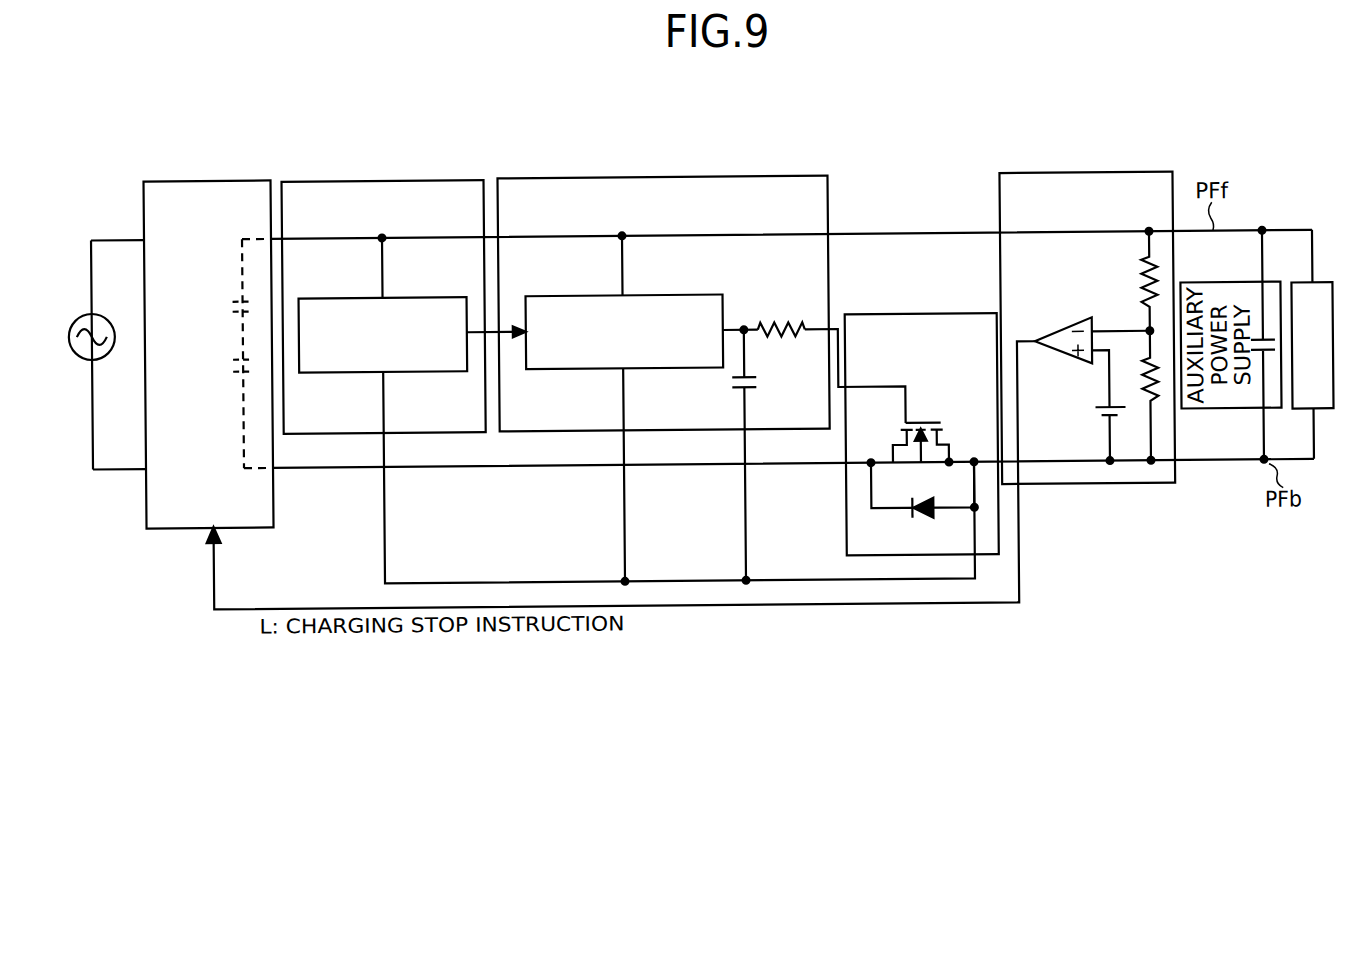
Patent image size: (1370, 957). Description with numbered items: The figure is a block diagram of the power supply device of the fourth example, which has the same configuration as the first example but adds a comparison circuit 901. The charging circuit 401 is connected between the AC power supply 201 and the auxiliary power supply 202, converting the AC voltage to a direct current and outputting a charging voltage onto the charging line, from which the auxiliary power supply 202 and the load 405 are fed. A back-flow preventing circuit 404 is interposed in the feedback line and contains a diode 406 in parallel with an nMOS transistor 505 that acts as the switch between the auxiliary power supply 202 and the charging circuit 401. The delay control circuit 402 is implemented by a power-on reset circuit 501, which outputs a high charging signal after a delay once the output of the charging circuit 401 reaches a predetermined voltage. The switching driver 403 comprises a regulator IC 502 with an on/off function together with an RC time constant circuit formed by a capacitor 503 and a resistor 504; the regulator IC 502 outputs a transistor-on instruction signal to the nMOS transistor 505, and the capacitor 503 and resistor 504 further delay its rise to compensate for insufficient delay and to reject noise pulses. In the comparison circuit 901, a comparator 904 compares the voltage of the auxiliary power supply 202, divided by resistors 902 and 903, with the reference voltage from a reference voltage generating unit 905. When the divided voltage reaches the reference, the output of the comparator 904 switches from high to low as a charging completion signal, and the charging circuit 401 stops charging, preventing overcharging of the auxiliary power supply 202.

The AC power supply 201 is at (102, 312).
The auxiliary power supply 202 is at (1265, 286).
The charging circuit 401 is at (207, 176).
The delay control circuit 402 is at (382, 177).
The switching driver 403 is at (663, 176).
The back-flow preventing circuit 404 is at (920, 314).
The load 405 is at (1322, 287).
The diode 406 is at (931, 518).
The power-on reset circuit 501 is at (432, 294).
The regulator IC 502 is at (700, 294).
The capacitor 503 is at (752, 380).
The resistor 504 is at (781, 321).
The nMOS transistor 505 is at (918, 421).
The comparison circuit 901 is at (1088, 175).
The resistor 902 is at (1143, 268).
The resistor 903 is at (1143, 374).
The comparator 904 is at (1066, 333).
The reference voltage generating unit 905 is at (1101, 410).